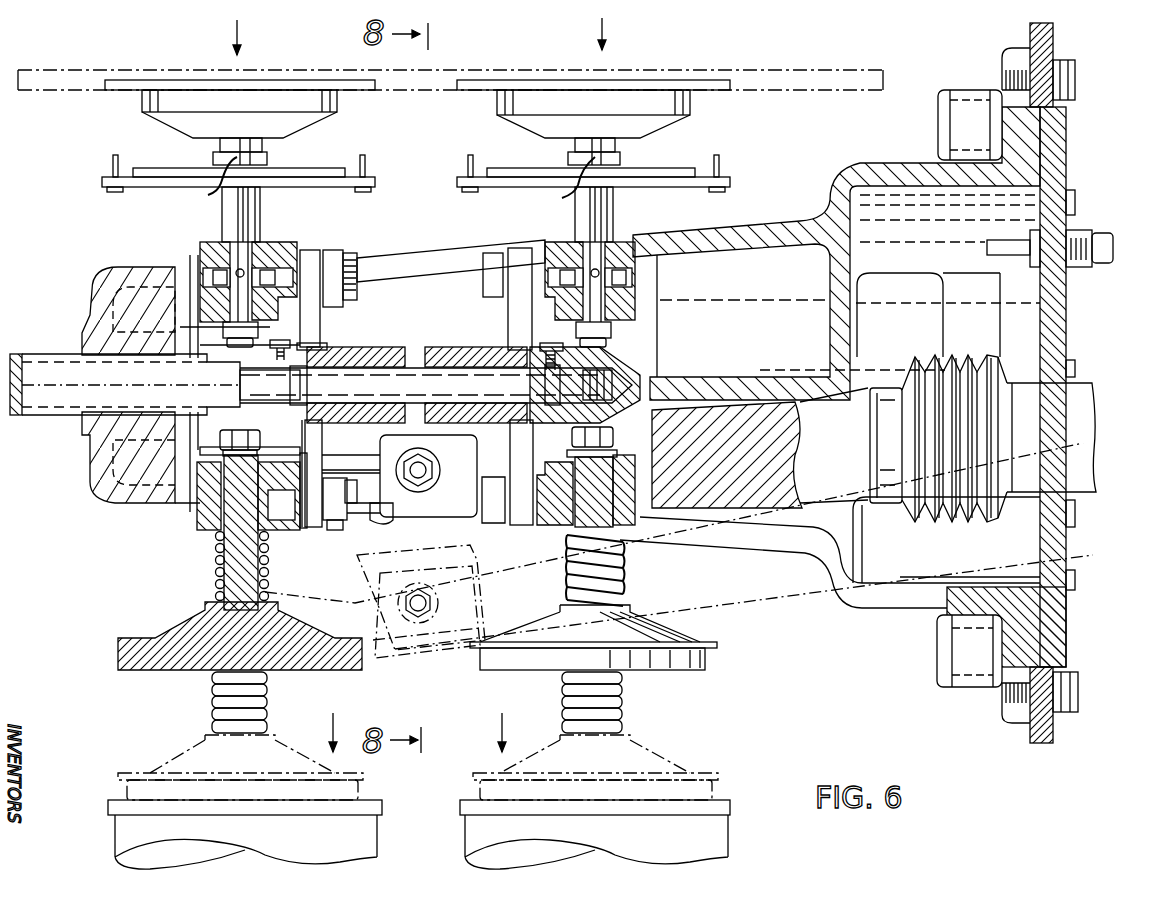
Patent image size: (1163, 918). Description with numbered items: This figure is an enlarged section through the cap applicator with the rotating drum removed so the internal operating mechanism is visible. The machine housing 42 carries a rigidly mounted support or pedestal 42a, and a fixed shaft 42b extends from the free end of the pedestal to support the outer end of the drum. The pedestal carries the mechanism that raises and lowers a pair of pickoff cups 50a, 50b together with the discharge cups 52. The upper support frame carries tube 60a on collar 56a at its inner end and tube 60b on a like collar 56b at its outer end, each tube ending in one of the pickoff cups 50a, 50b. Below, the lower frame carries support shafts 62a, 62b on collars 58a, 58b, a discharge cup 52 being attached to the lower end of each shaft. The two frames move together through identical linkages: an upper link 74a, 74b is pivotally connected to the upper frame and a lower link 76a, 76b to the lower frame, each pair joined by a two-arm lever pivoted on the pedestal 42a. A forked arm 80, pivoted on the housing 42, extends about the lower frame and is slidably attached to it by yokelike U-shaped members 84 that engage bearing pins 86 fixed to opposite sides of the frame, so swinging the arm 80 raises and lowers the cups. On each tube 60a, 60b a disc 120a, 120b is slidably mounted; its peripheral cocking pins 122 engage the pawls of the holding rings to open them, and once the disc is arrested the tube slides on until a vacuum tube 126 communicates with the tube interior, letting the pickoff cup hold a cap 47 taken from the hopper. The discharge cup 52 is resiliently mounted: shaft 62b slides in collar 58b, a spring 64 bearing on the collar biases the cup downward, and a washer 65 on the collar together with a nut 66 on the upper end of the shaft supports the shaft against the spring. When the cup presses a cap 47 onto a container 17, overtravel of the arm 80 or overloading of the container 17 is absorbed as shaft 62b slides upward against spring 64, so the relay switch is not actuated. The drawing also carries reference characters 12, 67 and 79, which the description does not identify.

The drive shaft 12 is at (376, 380).
The container 17 is at (470, 832).
The machine housing 42 is at (1067, 159).
The support or pedestal 42a is at (113, 268).
The fixed shaft 42b is at (31, 354).
The cap 47 is at (383, 812).
The pickoff cup 50a is at (706, 113).
The pickoff cup 50b is at (343, 115).
The discharge cup 52 is at (170, 636).
The collar 56a is at (565, 245).
The bearing block 56b is at (280, 245).
The collar 58a is at (634, 472).
The collar 58b is at (205, 506).
The tube 60a is at (614, 209).
The tube 60b is at (261, 211).
The support shaft 62a is at (628, 542).
The support shaft 62b is at (246, 572).
The spring 64 is at (217, 557).
The washer 65 is at (260, 452).
The nut 66 is at (252, 438).
The plate 67 is at (205, 455).
The upper link 74a is at (486, 300).
The upper link 74b is at (312, 337).
The lower link 76a is at (310, 445).
The lower link 76b is at (534, 443).
The pin 79 is at (289, 512).
The forked arm 80 is at (1086, 400).
The yokelike U-shaped member 84 is at (402, 522).
The bearing pin 86 is at (407, 480).
The disc 120a is at (676, 171).
The disc 120b is at (288, 176).
The cocking pin 122 is at (113, 163).
The vacuum tube 126 is at (207, 195).